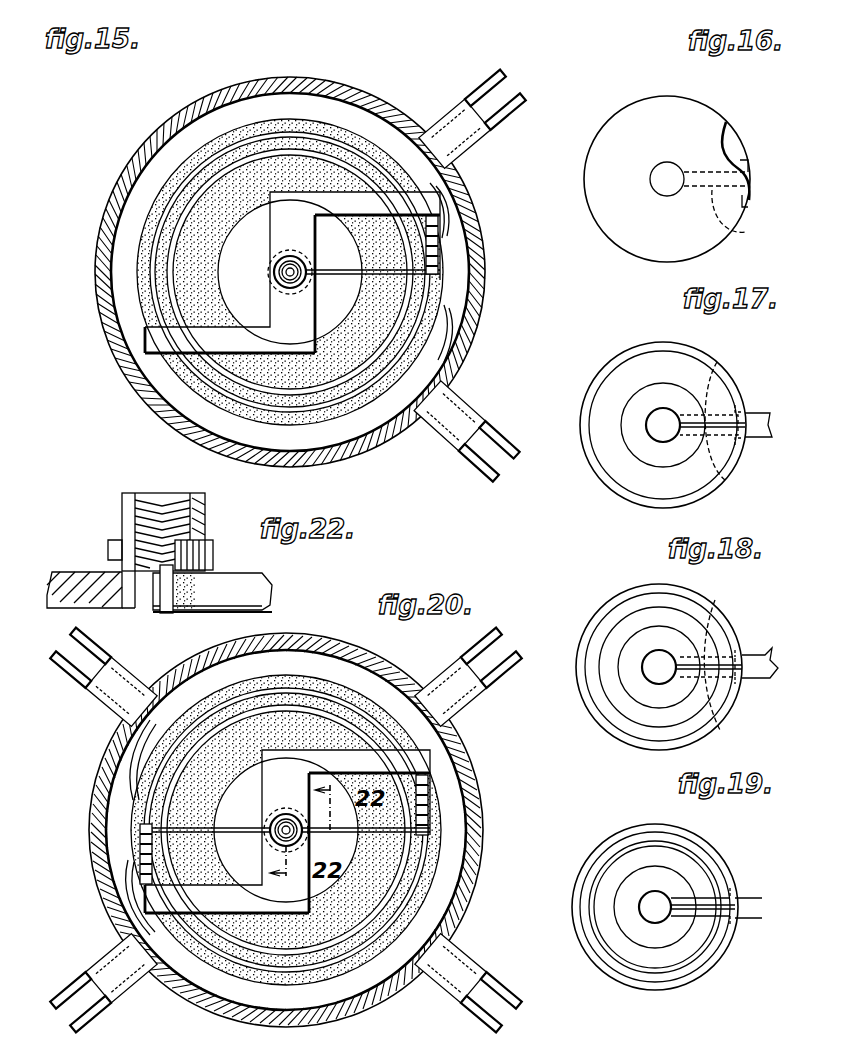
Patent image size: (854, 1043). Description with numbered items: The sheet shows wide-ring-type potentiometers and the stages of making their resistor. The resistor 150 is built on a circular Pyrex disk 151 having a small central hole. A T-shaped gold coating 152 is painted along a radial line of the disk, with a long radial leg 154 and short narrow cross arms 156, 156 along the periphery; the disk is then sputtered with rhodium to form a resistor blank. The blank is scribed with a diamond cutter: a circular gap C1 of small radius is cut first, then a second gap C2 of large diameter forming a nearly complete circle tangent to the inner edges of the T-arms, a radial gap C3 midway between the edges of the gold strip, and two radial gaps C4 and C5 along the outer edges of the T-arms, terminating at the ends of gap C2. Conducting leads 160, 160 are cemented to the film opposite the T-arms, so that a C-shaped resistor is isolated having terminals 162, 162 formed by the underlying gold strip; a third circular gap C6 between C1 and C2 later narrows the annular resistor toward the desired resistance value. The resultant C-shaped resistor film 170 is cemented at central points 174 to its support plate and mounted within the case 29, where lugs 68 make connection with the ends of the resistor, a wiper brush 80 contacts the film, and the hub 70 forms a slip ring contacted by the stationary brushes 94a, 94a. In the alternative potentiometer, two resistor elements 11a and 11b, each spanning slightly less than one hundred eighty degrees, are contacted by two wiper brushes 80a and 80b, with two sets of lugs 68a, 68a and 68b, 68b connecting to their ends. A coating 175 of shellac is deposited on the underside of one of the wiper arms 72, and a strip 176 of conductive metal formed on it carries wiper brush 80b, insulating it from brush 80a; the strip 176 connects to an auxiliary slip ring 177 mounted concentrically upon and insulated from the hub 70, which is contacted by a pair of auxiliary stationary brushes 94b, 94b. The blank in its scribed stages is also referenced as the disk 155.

In FIG. 15, the resistor 150 is at (348, 118).
In FIG. 16, the resistor 150 is at (731, 112).
In FIG. 19, the resistor 150 is at (595, 978).
In FIG. 16, the circular Pyrex disk 151 is at (738, 144).
In FIG. 16, the coating 152 is at (745, 183).
In FIG. 16, the radial leg 154 is at (740, 233).
In FIG. 17, the disc 155 is at (610, 495).
In FIG. 18, the disc 155 is at (609, 742).
In FIG. 16, the cross arms 156 is at (746, 166).
In FIG. 17, the cross arms 156 is at (745, 409).
In FIG. 18, the cross arms 156 is at (740, 681).
In FIG. 15, the conducting leads 160 is at (444, 203).
In FIG. 17, the conducting leads 160 is at (766, 434).
In FIG. 18, the conducting leads 160 is at (766, 655).
In FIG. 17, the terminals 162 is at (720, 372).
In FIG. 18, the terminals 162 is at (715, 606).
In FIG. 15, the C-shaped resistor film 170 is at (152, 263).
In FIG. 15, the central points 174 is at (282, 256).
In FIG. 20, the central points 174 is at (263, 830).
In FIG. 22, the coating of shellac 175 is at (272, 606).
In FIG. 22, the strip of conductive metal 176 is at (167, 614).
In FIG. 20, the auxiliary slip ring 177 is at (299, 839).
In FIG. 22, the auxiliary slip ring 177 is at (214, 558).
In FIG. 15, the lugs 68 is at (455, 105).
In FIG. 20, the lugs 68a is at (100, 692).
In FIG. 20, the lugs 68b is at (96, 1008).
In FIG. 15, the hub 70 is at (295, 298).
In FIG. 20, the hub 70 is at (290, 814).
In FIG. 22, the hub 70 is at (122, 496).
In FIG. 20, the wiper arms 72 is at (152, 900).
In FIG. 22, the wiper arms 72 is at (60, 574).
In FIG. 15, the wiper brush 80 is at (453, 266).
In FIG. 20, the wiper brush 80a is at (432, 820).
In FIG. 20, the wiper brush 80b is at (134, 866).
In FIG. 20, the resistor element 11a is at (135, 798).
In FIG. 20, the resistor element 11b is at (130, 848).
In FIG. 15, the case 29 is at (97, 347).
In FIG. 22, the stationary brushes 94a is at (118, 506).
In FIG. 22, the auxiliary stationary brushes 94b is at (108, 546).
In FIG. 15, the circular gap C1 is at (228, 335).
In FIG. 17, the circular gap C1 is at (622, 413).
In FIG. 18, the circular gap C1 is at (620, 660).
In FIG. 19, the circular gap C1 is at (614, 892).
In FIG. 15, the second gap C2 is at (183, 362).
In FIG. 17, the second gap C2 is at (596, 440).
In FIG. 18, the second gap C2 is at (600, 673).
In FIG. 19, the second gap C2 is at (596, 862).
In FIG. 15, the radial gap C3 is at (442, 279).
In FIG. 17, the radial gap C3 is at (663, 425).
In FIG. 18, the radial gap C3 is at (659, 667).
In FIG. 19, the radial gap C3 is at (655, 907).
In FIG. 15, the radial gap C4 is at (450, 240).
In FIG. 17, the radial gap C4 is at (740, 405).
In FIG. 18, the radial gap C4 is at (730, 650).
In FIG. 19, the radial gap C4 is at (731, 888).
In FIG. 15, the radial gap C5 is at (215, 375).
In FIG. 18, the radial gap C5 is at (610, 700).
In FIG. 19, the radial gap C5 is at (600, 914).
In FIG. 15, the third circular gap C6 is at (237, 392).
In FIG. 19, the third circular gap C6 is at (628, 970).